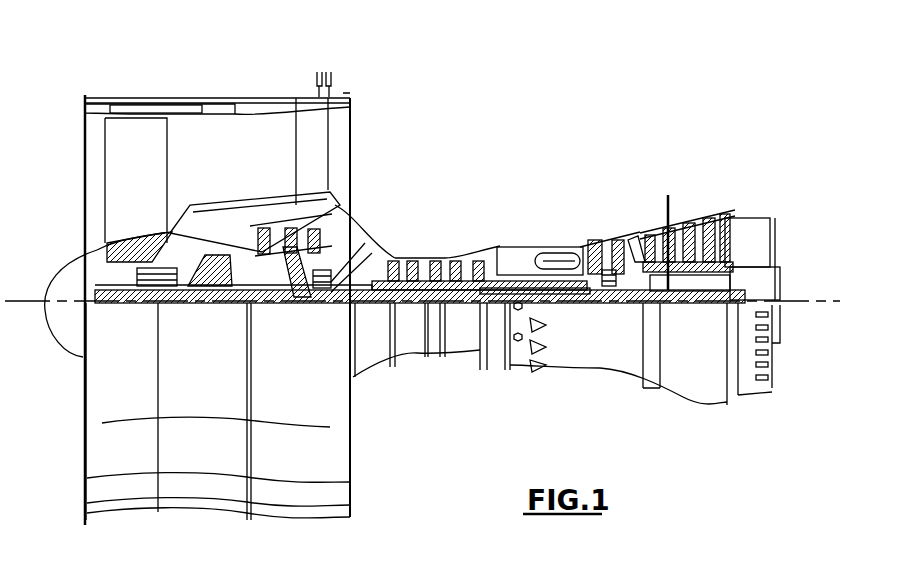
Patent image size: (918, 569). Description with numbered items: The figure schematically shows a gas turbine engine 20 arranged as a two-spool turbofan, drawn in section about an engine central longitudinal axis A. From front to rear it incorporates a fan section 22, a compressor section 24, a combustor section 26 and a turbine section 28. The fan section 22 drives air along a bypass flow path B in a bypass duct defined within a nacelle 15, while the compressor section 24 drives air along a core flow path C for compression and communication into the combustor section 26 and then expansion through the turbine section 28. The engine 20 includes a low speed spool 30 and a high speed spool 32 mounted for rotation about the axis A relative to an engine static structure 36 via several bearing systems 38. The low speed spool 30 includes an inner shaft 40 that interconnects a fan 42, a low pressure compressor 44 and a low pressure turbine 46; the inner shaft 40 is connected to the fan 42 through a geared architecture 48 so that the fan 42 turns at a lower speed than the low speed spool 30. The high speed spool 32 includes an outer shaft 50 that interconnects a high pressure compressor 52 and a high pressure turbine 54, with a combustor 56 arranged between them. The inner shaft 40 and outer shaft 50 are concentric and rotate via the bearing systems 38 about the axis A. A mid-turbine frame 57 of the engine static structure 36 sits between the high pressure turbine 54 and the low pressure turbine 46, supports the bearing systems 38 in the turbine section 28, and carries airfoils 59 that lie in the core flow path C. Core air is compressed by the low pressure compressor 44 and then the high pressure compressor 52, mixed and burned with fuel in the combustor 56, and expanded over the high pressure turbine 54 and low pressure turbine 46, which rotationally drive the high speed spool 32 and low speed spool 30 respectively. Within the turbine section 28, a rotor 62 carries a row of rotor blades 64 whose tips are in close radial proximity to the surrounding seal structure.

The nacelle 15 is at (215, 97).
The gas turbine engine 20 is at (553, 130).
The fan section 22 is at (165, 88).
The compressor section 24 is at (380, 238).
The combustor section 26 is at (549, 226).
The turbine section 28 is at (658, 192).
The low speed spool 30 is at (465, 312).
The high speed spool 32 is at (497, 262).
The engine static structure 36 is at (494, 375).
The bearing systems 38 is at (320, 304).
The inner shaft 40 is at (366, 372).
The fan 42 is at (146, 189).
The low pressure compressor 44 is at (300, 222).
The low pressure turbine 46 is at (692, 228).
The geared architecture 48 is at (214, 297).
The outer shaft 50 is at (545, 296).
The high pressure compressor 52 is at (457, 258).
The high pressure turbine 54 is at (627, 234).
The combustor 56 is at (549, 260).
The mid-turbine frame 57 is at (636, 232).
The airfoils 59 is at (652, 284).
The rotor 62 is at (707, 308).
The rotor blades 64 is at (733, 215).
The engine central longitudinal axis A is at (845, 301).
The bypass flow path B is at (182, 150).
The core flow path C is at (215, 227).